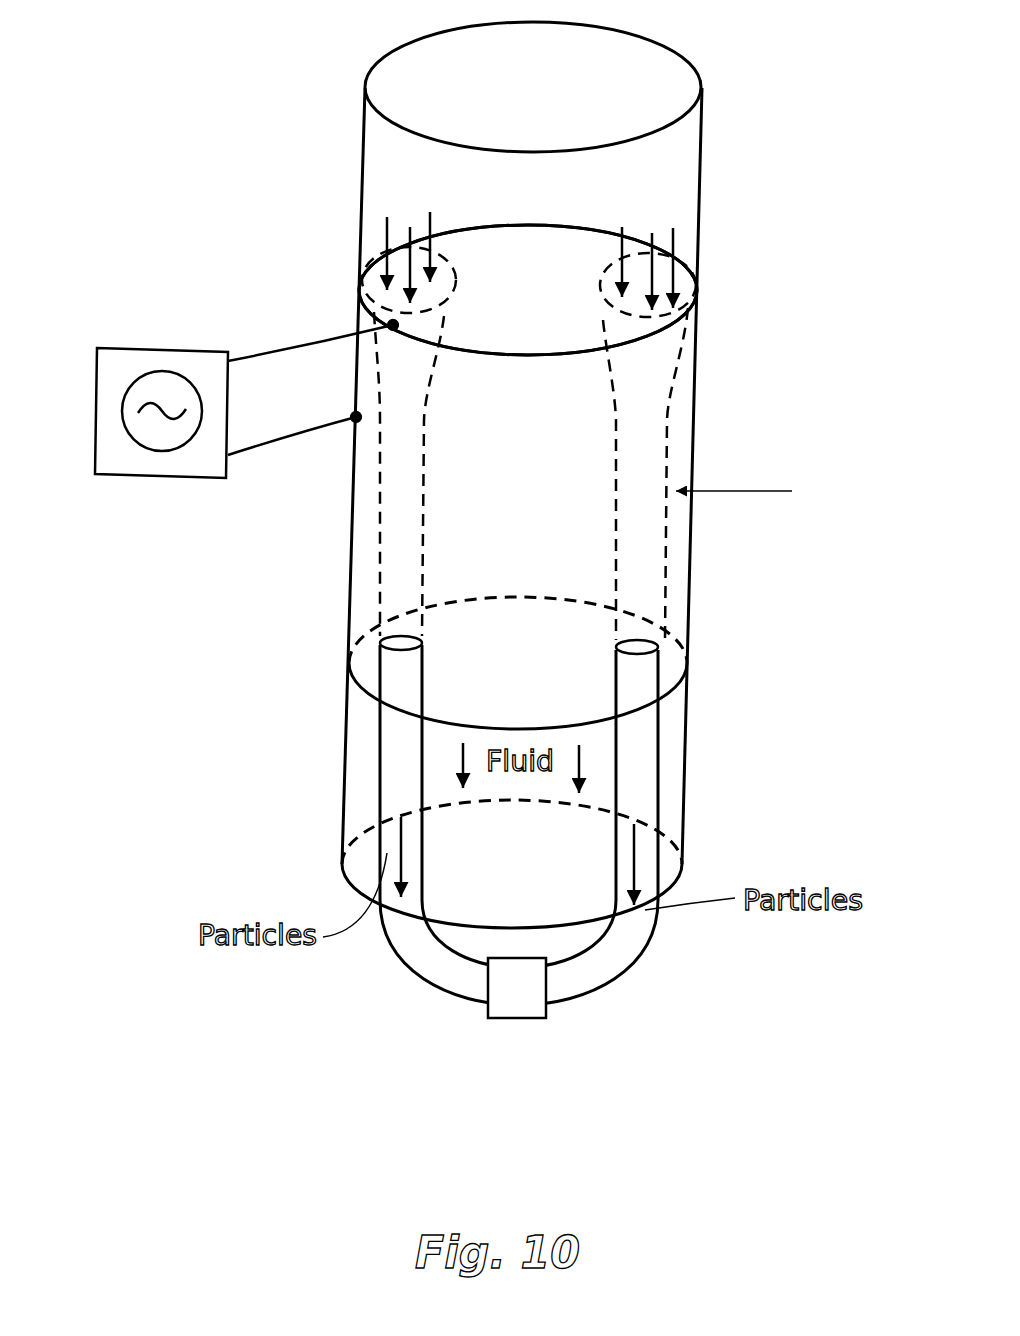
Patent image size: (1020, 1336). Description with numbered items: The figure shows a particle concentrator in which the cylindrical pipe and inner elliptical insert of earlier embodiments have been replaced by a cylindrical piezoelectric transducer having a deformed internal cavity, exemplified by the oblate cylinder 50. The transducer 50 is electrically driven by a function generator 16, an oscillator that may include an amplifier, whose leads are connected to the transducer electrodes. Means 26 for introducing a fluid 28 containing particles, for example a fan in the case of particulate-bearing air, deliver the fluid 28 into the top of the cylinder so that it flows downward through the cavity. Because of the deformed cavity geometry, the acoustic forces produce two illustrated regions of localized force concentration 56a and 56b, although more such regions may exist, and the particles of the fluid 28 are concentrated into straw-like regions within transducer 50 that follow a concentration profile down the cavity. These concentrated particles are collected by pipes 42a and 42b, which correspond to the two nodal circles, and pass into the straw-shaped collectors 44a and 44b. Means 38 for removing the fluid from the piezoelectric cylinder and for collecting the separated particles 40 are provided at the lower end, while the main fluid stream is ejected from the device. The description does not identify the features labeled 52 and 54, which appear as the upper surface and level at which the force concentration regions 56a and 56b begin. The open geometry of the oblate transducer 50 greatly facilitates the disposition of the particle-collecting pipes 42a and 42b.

The function generator 16 is at (163, 490).
The means for introducing fluid 26 is at (356, 167).
The fluid containing particles 28 is at (550, 198).
The means for removing fluid and collecting particles 38 is at (688, 752).
The separated particles 40 is at (532, 1003).
The particle-collecting pipe 42a is at (398, 648).
The particle-collecting pipe 42b is at (652, 650).
The collector 44a is at (374, 778).
The collector 44b is at (657, 814).
The oblate cylindrical piezoelectric transducer 50 is at (692, 407).
The fluid surface 52 is at (583, 252).
The interface plane 54 is at (547, 298).
The region of localized force concentration 56a is at (375, 252).
The region of localized force concentration 56b is at (690, 260).